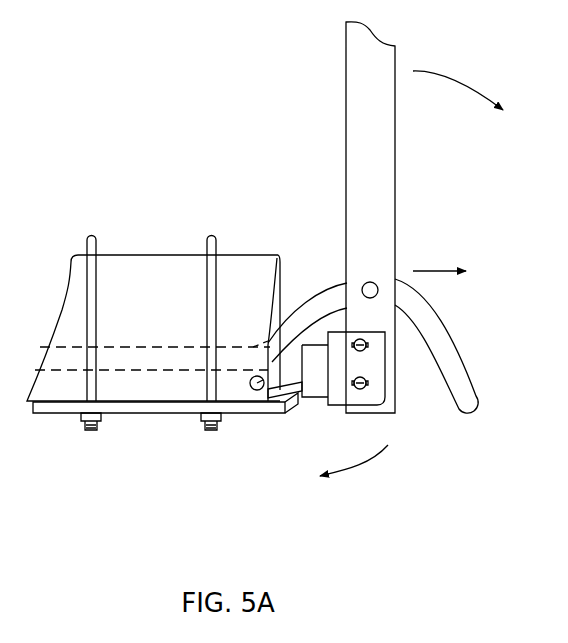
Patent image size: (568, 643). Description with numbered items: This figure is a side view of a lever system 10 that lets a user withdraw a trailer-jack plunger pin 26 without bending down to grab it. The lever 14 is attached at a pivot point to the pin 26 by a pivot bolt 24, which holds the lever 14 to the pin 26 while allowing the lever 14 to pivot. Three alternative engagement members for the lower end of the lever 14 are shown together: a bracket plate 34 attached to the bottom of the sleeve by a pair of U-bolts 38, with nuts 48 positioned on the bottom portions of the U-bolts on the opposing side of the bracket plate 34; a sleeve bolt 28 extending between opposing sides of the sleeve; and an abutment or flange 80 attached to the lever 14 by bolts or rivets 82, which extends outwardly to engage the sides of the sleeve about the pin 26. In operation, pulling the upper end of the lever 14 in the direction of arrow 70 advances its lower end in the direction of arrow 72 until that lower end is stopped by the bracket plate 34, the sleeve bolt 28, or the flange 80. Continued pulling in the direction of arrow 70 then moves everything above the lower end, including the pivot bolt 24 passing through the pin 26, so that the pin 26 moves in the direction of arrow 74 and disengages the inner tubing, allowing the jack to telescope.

The lever system 10 is at (238, 155).
The lever 14 is at (382, 205).
The pivot bolt 24 is at (371, 290).
The plunger pin 26 is at (457, 375).
The sleeve bolt 28 is at (250, 392).
The bracket plate 34 is at (150, 408).
The U-bolts 38 is at (88, 237).
The nuts 48 is at (77, 420).
The arrow indicating pulling direction of the lever upper end 70 is at (465, 82).
The arrow indicating advance direction of the lever lower end 72 is at (370, 467).
The arrow indicating movement direction of the pin 74 is at (440, 268).
The flange 80 is at (320, 403).
The rivets 82 is at (366, 345).